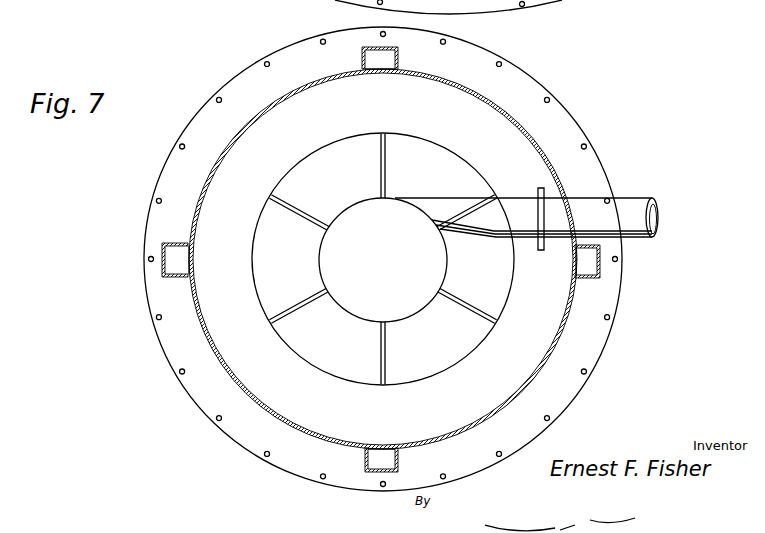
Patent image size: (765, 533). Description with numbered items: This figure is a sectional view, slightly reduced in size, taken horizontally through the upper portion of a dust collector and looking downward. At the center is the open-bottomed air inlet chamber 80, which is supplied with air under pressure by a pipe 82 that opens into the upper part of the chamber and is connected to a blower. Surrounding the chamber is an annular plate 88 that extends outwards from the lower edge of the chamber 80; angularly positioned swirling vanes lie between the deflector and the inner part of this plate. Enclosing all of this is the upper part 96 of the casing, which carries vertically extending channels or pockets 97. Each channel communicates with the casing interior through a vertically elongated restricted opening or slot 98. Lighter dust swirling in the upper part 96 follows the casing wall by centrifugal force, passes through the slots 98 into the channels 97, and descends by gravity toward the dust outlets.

The air inlet chamber 80 is at (383, 260).
The pipe 82 is at (482, 214).
The annular plate 88 is at (337, 163).
The upper part of the casing 96 is at (464, 90).
The vertically extending channels 97 is at (390, 52).
The restricted openings or slots 98 is at (383, 72).